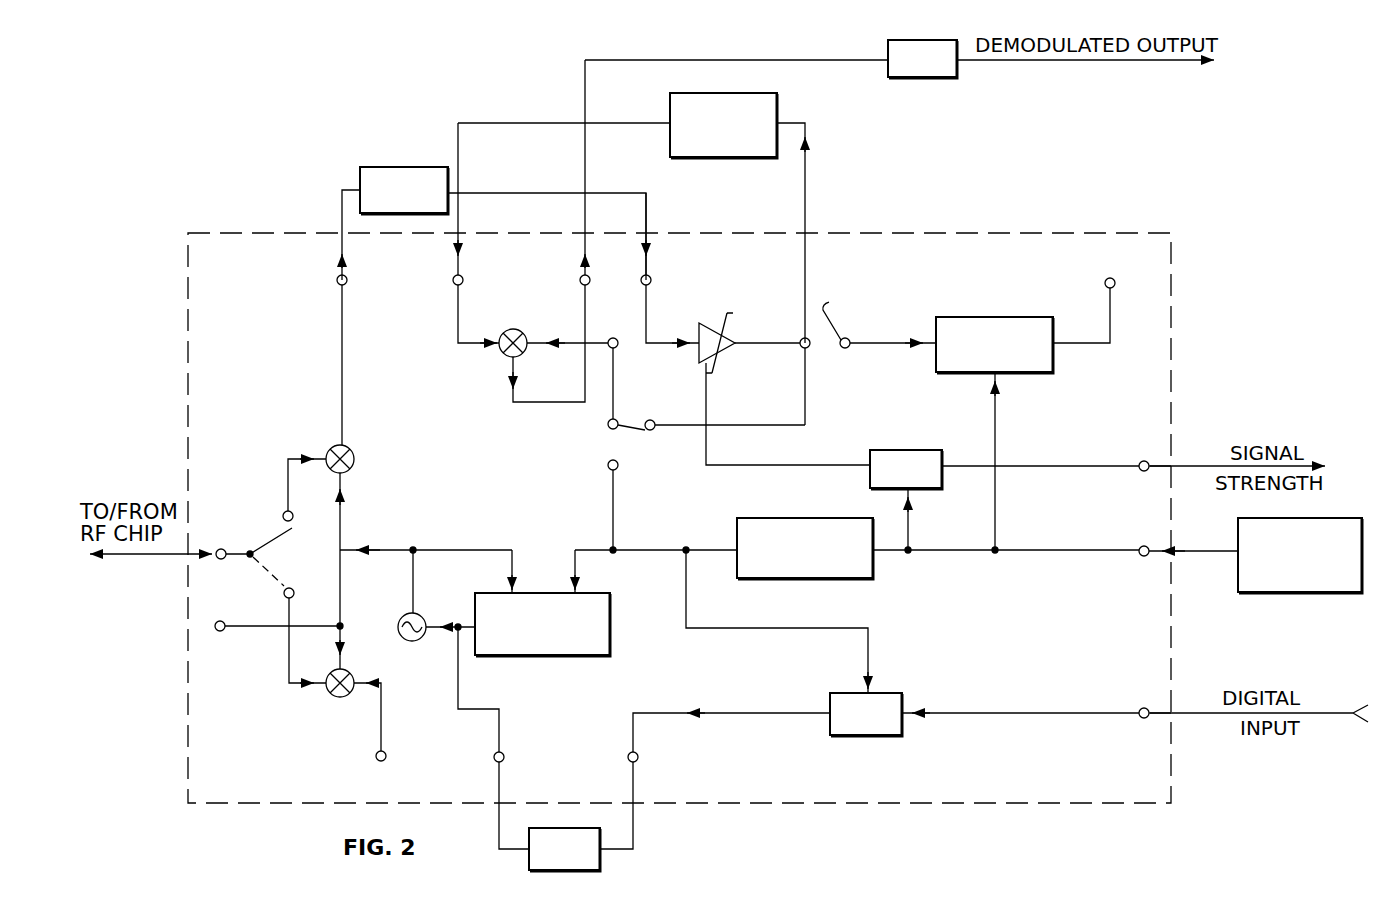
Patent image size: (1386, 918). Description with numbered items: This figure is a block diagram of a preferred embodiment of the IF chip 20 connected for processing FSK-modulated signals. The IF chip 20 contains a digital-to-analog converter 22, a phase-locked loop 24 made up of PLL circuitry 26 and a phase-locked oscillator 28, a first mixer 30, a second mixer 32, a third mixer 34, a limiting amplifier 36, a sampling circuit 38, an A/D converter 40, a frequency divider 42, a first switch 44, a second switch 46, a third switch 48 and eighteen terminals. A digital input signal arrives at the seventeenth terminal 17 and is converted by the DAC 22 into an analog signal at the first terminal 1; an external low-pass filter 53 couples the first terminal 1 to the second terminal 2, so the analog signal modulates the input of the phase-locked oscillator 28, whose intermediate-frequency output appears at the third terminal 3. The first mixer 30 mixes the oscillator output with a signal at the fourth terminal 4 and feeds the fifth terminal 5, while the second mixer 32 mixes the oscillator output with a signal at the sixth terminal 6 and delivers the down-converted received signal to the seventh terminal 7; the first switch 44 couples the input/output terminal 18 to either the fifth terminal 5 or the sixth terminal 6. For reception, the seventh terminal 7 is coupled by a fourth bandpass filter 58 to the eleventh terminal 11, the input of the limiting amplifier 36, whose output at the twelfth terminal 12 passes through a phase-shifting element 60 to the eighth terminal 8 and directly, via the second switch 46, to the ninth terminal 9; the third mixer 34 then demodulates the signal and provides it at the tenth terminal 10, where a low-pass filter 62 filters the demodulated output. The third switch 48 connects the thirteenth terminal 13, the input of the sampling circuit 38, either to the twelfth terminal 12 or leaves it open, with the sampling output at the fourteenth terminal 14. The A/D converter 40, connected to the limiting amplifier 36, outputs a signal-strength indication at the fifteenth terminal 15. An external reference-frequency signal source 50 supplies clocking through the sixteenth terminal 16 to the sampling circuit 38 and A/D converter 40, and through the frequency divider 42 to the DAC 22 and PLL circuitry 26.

The first terminal 1 is at (641, 747).
The second terminal 2 is at (507, 747).
The third terminal 3 is at (279, 638).
The fourth terminal 4 is at (370, 722).
The fifth terminal 5 is at (305, 635).
The sixth terminal 6 is at (304, 490).
The seventh terminal 7 is at (334, 349).
The eighth terminal 8 is at (470, 233).
The ninth input terminal 9 is at (608, 367).
The tenth terminal 10 is at (551, 231).
The eleventh terminal 11 is at (658, 268).
The twelfth terminal 12 is at (792, 381).
The thirteenth terminal 13 is at (887, 355).
The fourteenth terminal 14 is at (1096, 292).
The fifteenth terminal 15 is at (1144, 453).
The sixteenth terminal 16 is at (1181, 538).
The seventeenth terminal 17 is at (1148, 700).
The input/output terminal 18 is at (235, 542).
The IF chip 20 is at (272, 233).
The digital-to-analog converter 22 is at (875, 693).
The phase-locked loop 24 is at (465, 588).
The PLL circuitry 26 is at (585, 593).
The phase-locked oscillator 28 is at (412, 641).
The first mixer 30 is at (338, 697).
The second mixer 32 is at (352, 452).
The third mixer 34 is at (513, 329).
The limiting amplifier 36 is at (707, 323).
The sampling circuit 38 is at (1018, 317).
The analog-to-digital converter 40 is at (912, 450).
The frequency divider 42 is at (800, 518).
The first switch 44 is at (277, 531).
The second switch 46 is at (637, 429).
The third switch 48 is at (839, 310).
The reference-frequency signal source 50 is at (1336, 518).
The low-pass filter 53 is at (605, 871).
The fourth bandpass filter 58 is at (400, 167).
The phase-shifting element 60 is at (731, 93).
The low-pass filter 62 is at (918, 41).